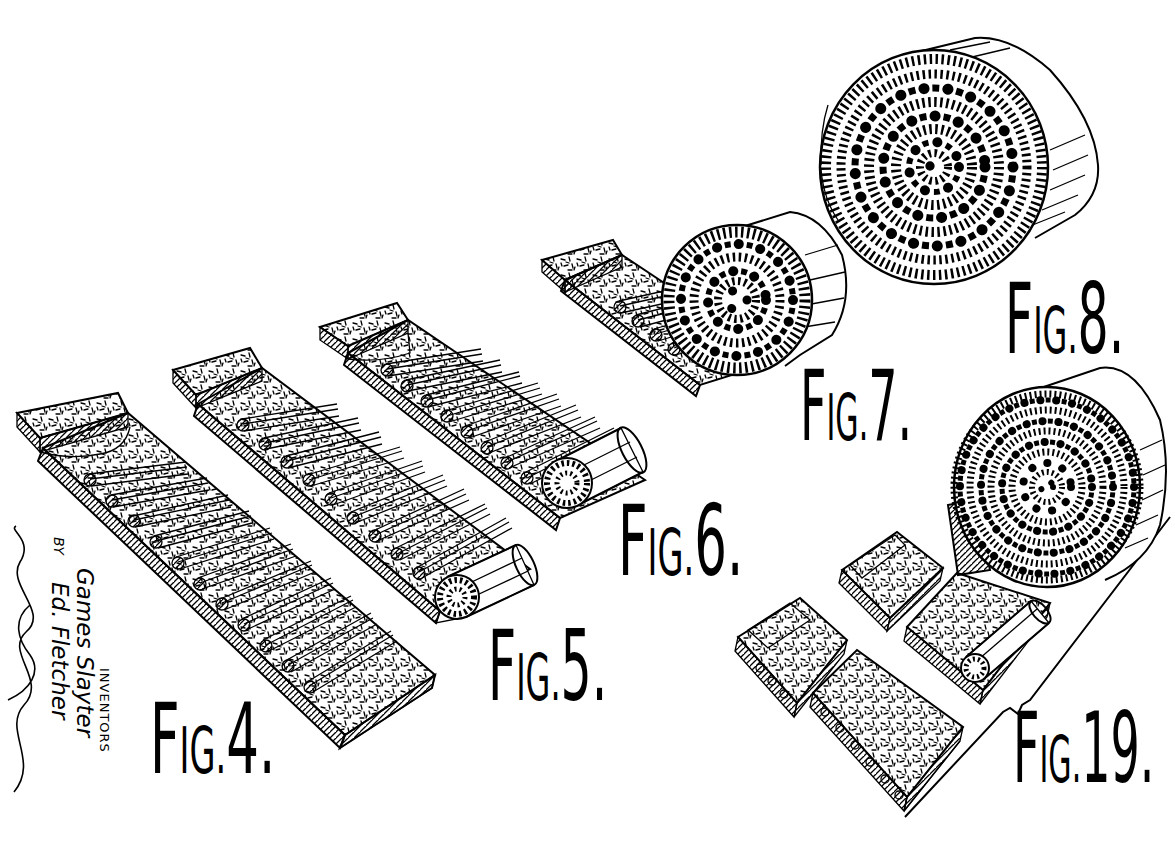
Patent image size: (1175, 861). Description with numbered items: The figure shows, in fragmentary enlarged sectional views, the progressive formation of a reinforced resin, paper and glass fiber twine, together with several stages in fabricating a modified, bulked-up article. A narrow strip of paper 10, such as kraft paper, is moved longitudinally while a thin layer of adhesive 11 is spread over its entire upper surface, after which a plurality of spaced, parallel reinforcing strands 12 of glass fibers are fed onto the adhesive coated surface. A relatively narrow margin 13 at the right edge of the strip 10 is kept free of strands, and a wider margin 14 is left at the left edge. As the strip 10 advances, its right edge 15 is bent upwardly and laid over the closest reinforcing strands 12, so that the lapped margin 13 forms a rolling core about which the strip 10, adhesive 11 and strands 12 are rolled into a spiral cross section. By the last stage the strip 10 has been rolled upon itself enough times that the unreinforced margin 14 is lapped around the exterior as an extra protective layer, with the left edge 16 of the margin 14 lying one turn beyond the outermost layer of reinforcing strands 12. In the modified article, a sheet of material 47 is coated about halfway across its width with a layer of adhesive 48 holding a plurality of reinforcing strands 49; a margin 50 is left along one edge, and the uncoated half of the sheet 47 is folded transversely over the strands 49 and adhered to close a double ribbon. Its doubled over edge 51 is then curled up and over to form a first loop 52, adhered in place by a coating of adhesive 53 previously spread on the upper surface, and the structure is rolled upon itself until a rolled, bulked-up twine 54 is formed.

In FIG. 4, the strip of paper 10 is at (60, 488).
In FIG. 5, the strip of paper 10 is at (390, 571).
In FIG. 6, the strip of paper 10 is at (480, 462).
In FIG. 7, the strip of paper 10 is at (672, 320).
In FIG. 4, the layer of adhesive 11 is at (100, 405).
In FIG. 6, the layer of adhesive 11 is at (545, 408).
In FIG. 4, the reinforcing strands 12 is at (160, 462).
In FIG. 5, the reinforcing strands 12 is at (438, 583).
In FIG. 6, the reinforcing strands 12 is at (468, 352).
In FIG. 7, the reinforcing strands 12 is at (716, 372).
In FIG. 8, the reinforcing strands 12 is at (832, 122).
In FIG. 4, the margin 13 is at (324, 740).
In FIG. 5, the margin 13 is at (520, 560).
In FIG. 6, the margin 13 is at (597, 465).
In FIG. 7, the margin 13 is at (754, 293).
In FIG. 8, the margin 13 is at (934, 167).
In FIG. 4, the margin 14 is at (15, 451).
In FIG. 7, the margin 14 is at (551, 301).
In FIG. 8, the margin 14 is at (820, 150).
In FIG. 4, the right edge 15 is at (410, 705).
In FIG. 5, the right edge 15 is at (478, 545).
In FIG. 8, the right edge 15 is at (1078, 90).
In FIG. 4, the left edge 16 is at (70, 402).
In FIG. 5, the left edge 16 is at (218, 360).
In FIG. 6, the left edge 16 is at (370, 318).
In FIG. 7, the left edge 16 is at (585, 250).
In FIG. 8, the left edge 16 is at (826, 180).
In FIG. 19, the sheet of material 47 is at (840, 747).
In FIG. 19, the layer of adhesive 48 is at (818, 712).
In FIG. 19, the reinforcing strands 49 is at (782, 697).
In FIG. 19, the margin 50 is at (958, 522).
In FIG. 19, the doubled over edge 51 is at (900, 803).
In FIG. 19, the first loop 52 is at (954, 476).
In FIG. 19, the coating of adhesive 53 is at (825, 615).
In FIG. 19, the rolled, bulked-up twine 54 is at (984, 401).